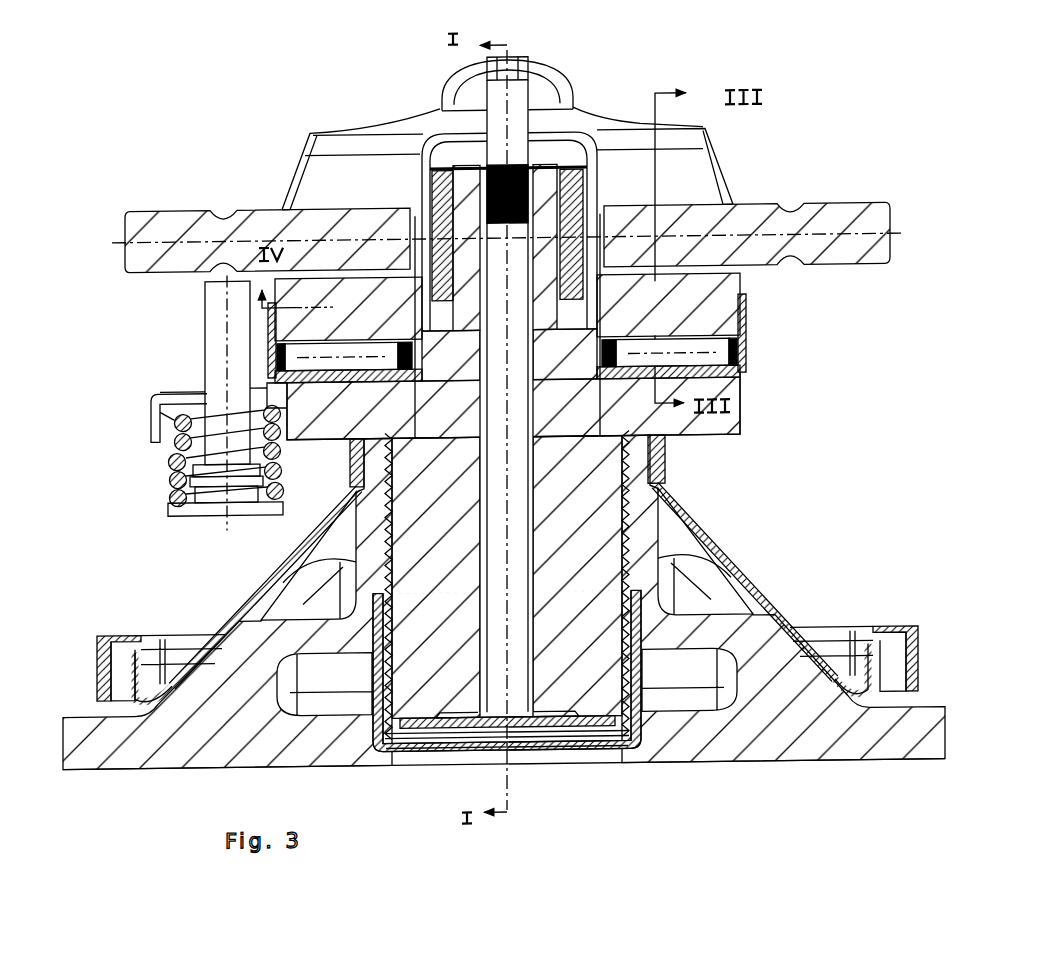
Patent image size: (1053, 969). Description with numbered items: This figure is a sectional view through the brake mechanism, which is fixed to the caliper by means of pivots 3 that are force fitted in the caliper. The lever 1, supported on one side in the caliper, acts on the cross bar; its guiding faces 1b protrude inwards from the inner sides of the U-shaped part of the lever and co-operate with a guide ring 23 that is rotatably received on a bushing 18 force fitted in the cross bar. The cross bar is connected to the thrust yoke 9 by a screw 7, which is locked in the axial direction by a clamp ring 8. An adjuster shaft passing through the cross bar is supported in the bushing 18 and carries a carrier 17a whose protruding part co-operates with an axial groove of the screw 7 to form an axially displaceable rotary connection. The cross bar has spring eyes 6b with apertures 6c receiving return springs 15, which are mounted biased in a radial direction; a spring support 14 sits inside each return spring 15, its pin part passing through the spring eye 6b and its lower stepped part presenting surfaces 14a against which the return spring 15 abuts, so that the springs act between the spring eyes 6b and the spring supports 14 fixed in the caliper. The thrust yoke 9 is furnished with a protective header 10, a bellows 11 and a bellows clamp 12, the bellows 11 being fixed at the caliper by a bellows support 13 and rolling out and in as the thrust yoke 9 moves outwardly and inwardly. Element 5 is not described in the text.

The lever 1 is at (693, 180).
The guiding faces 1b is at (290, 195).
The pivots 3 is at (830, 219).
The flange body 5 is at (757, 361).
The spring eyes 6b is at (155, 394).
The apertures 6c is at (158, 418).
The screw 7 is at (612, 692).
The clamp ring 8 is at (470, 727).
The thrust yoke 9 is at (905, 737).
The protective header 10 is at (423, 761).
The bellows 11 is at (744, 569).
The bellows clamp 12 is at (672, 464).
The bellows support 13 is at (921, 661).
The spring support 14 is at (215, 337).
The surfaces 14a is at (196, 499).
The return springs 15 is at (170, 482).
The carrier 17a is at (545, 738).
The bushing 18 is at (347, 460).
The guide ring 23 is at (620, 328).